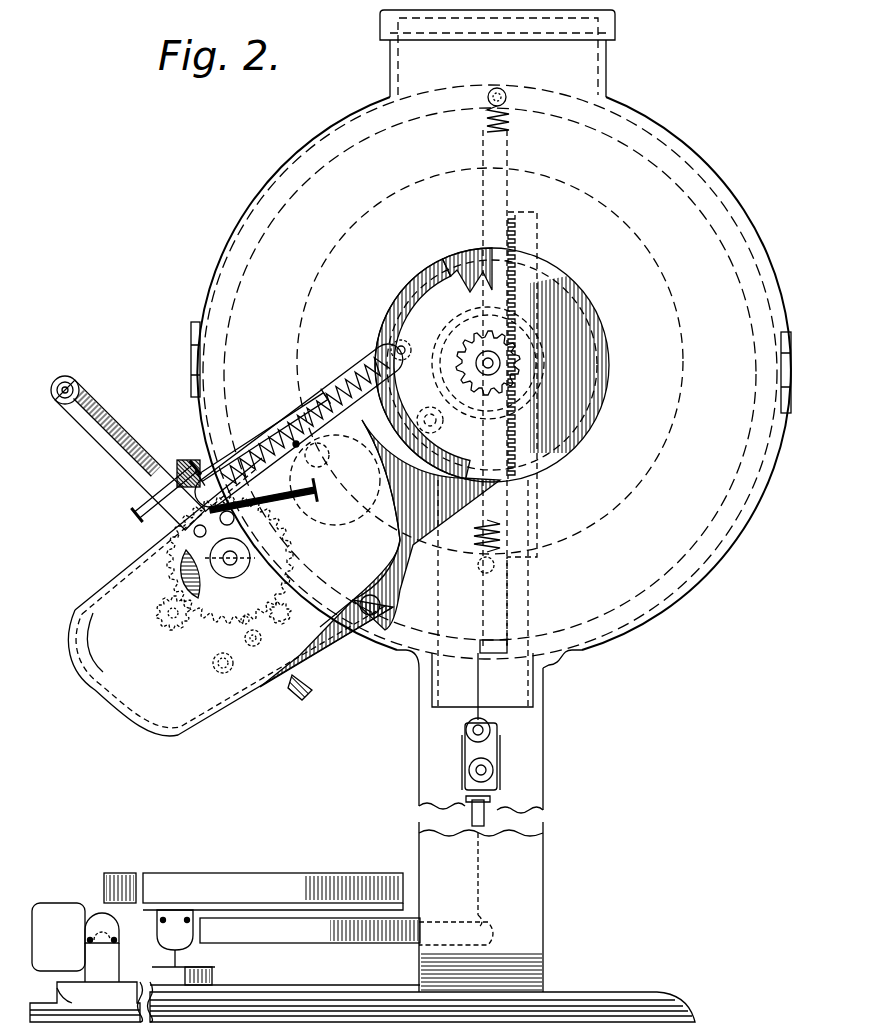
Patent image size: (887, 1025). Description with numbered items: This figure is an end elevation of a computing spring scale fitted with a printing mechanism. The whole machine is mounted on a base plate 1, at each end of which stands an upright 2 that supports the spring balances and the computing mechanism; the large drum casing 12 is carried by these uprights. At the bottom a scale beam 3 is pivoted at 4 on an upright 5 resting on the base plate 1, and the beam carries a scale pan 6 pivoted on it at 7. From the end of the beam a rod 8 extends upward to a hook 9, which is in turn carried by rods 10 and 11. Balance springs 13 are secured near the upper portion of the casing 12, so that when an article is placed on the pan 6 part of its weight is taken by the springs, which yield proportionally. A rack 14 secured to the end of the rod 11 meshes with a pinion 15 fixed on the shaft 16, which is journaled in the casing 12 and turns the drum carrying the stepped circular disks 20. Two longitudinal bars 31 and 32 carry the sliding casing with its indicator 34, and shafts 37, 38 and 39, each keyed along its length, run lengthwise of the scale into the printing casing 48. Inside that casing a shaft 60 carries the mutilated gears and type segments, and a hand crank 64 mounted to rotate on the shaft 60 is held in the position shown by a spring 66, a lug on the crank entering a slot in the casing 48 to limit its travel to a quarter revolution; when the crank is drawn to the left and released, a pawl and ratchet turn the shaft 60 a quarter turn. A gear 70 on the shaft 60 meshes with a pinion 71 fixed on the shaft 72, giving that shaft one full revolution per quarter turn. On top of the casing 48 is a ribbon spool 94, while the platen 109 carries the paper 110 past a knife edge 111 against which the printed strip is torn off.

The base plate 1 is at (585, 1000).
The uprights 2 is at (543, 907).
The scale beam 3 is at (300, 936).
The pivot 4 is at (95, 907).
The upright 5 is at (112, 968).
The scale pan 6 is at (310, 878).
The pivot 7 is at (196, 955).
The rod 8 is at (478, 887).
The hook 9 is at (486, 808).
The rod 10 is at (497, 771).
The rod 11 is at (491, 731).
The casing 12 is at (661, 612).
The balance springs 13 is at (510, 133).
The rack 14 is at (525, 541).
The pinions 15 is at (470, 386).
The shaft 16 is at (520, 342).
The circular rings or disks 20 is at (670, 178).
The bar 31 is at (230, 560).
The bar 32 is at (305, 690).
The indicator 34 is at (196, 416).
The shaft 37 is at (289, 613).
The shaft 38 is at (261, 637).
The shaft 39 is at (214, 666).
The casing 48 is at (196, 733).
The shaft 60 is at (241, 569).
The hand crank 64 is at (190, 460).
The spring 66 is at (330, 405).
The gear 70 is at (243, 623).
The pinion 71 is at (169, 620).
The shaft 72 is at (160, 612).
The ribbon spool 94 is at (136, 520).
The platen 109 is at (342, 482).
The paper 110 is at (438, 430).
The knife edge 111 is at (296, 444).